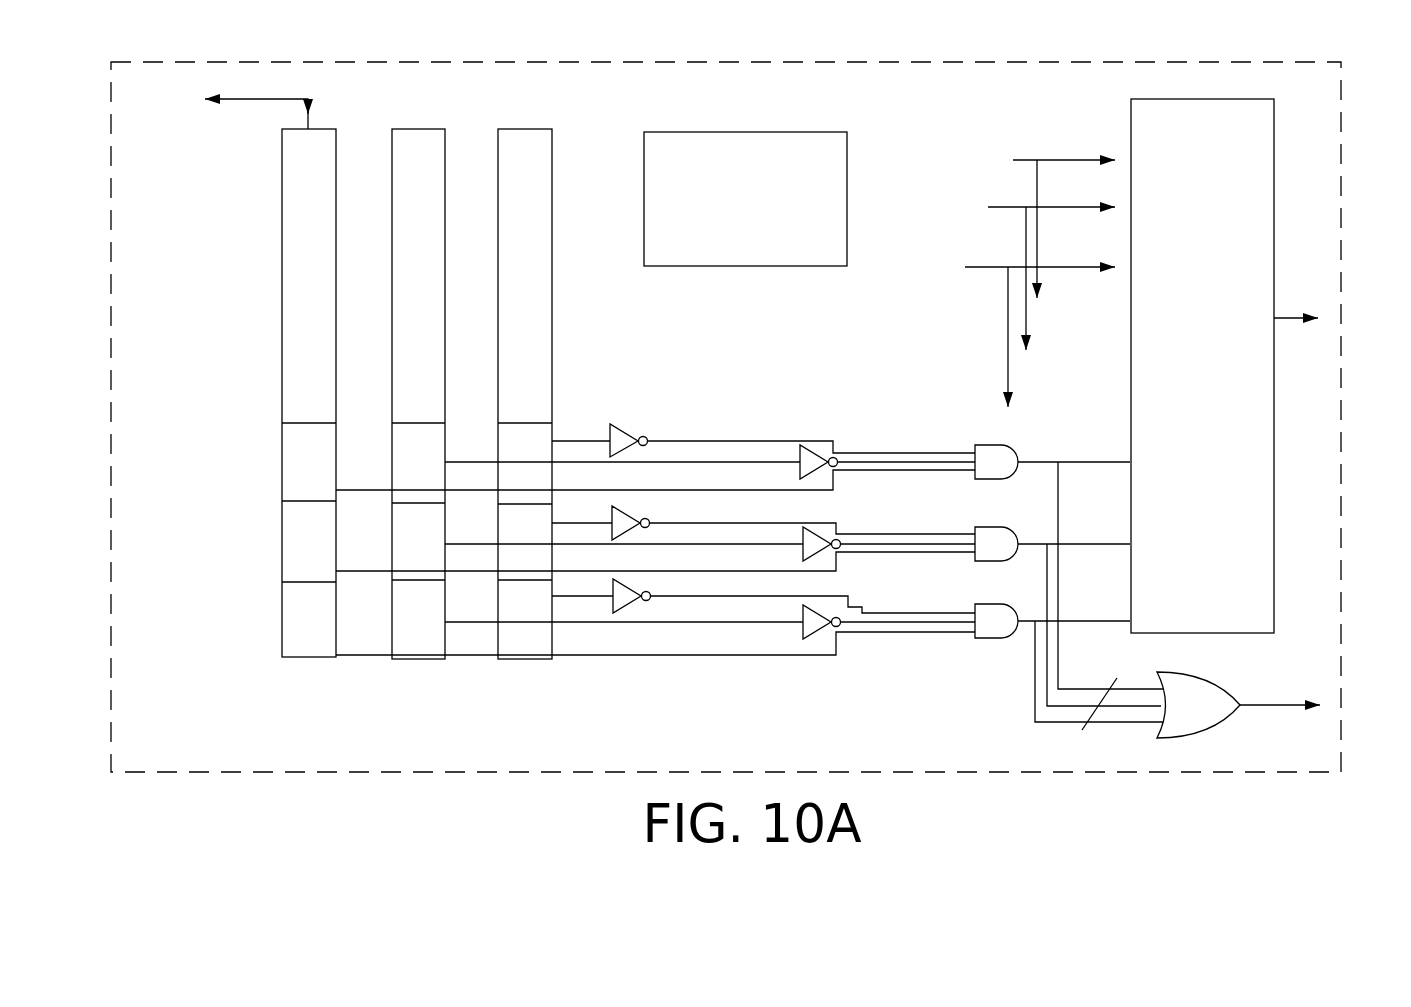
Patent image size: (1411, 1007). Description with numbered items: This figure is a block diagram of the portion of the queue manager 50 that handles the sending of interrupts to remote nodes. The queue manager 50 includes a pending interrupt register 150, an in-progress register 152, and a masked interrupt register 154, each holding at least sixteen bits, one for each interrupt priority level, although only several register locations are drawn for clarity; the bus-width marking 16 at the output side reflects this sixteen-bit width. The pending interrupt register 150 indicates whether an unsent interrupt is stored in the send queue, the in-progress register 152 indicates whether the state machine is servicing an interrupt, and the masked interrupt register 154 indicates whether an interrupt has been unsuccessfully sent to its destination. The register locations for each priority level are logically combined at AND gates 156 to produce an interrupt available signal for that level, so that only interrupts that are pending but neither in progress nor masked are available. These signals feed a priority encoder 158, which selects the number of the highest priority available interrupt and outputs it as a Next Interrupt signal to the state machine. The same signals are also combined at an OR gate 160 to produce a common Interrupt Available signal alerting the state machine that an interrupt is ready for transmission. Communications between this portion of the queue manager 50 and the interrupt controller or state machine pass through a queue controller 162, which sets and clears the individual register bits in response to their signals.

The queue manager 50 is at (726, 392).
The pending interrupt register 150 is at (281, 393).
The in-progress register 152 is at (400, 129).
The masked interrupt register 154 is at (556, 395).
The AND gates 156 is at (982, 444).
The priority encoder 158 is at (1173, 99).
The OR gate 160 is at (1235, 717).
The queue controller 162 is at (745, 199).
The bus width indicator 16 is at (1091, 720).